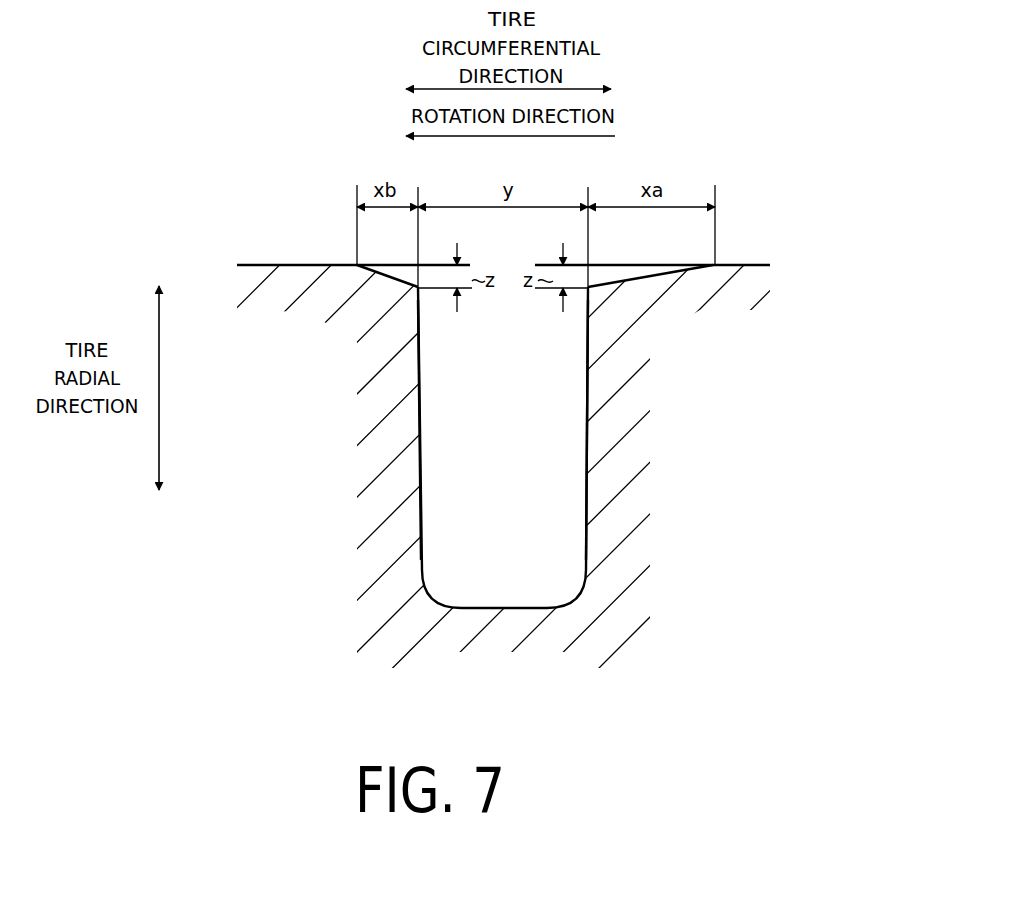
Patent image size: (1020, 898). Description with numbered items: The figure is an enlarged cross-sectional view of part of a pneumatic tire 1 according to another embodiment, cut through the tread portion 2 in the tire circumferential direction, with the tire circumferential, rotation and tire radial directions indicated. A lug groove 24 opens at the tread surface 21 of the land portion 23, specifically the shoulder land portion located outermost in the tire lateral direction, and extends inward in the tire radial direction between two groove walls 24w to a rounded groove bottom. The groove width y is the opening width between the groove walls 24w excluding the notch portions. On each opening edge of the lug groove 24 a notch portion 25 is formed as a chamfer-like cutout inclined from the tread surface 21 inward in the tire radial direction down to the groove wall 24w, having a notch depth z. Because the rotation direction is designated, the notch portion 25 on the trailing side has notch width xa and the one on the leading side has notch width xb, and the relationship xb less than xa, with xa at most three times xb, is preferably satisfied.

The pneumatic tire 1 is at (802, 105).
The tread portion 2 is at (745, 285).
The tread surface 21 is at (736, 260).
The land portion 23 is at (253, 290).
The lug groove 24 is at (516, 462).
The groove wall 24w is at (420, 380).
The notch portion 25 is at (392, 278).